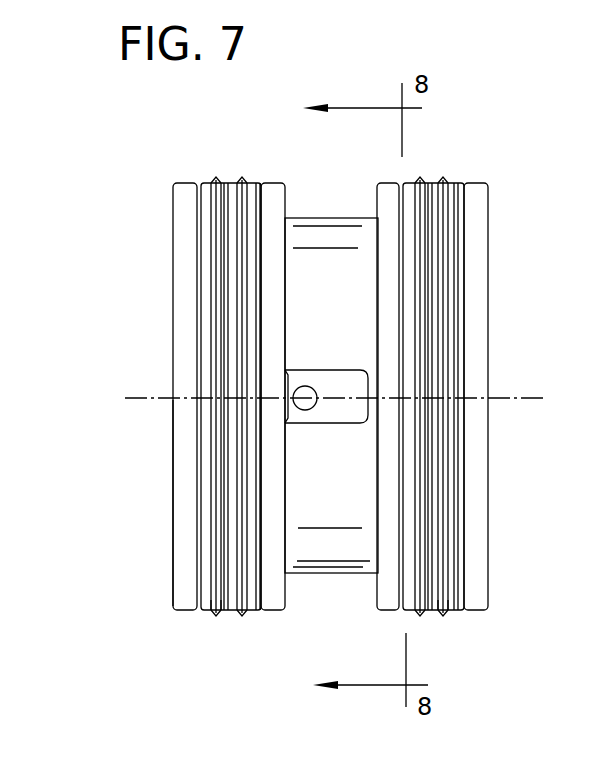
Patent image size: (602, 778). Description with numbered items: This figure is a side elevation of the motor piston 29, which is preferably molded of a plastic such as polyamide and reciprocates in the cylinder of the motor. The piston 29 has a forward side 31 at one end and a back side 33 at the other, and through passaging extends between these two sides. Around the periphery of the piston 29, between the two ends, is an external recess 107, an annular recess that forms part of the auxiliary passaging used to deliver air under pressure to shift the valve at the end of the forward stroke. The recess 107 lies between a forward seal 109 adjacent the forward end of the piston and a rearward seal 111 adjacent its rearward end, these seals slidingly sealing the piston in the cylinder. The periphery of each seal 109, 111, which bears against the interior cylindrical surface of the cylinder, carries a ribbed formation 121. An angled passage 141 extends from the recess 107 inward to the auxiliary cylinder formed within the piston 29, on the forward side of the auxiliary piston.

The piston 29 is at (162, 620).
The forward side 31 is at (155, 319).
The back side 33 is at (508, 335).
The external recess 107 is at (323, 218).
The forward seal 109 is at (231, 168).
The rearward seal 111 is at (434, 168).
The ribbed formation 121 is at (216, 617).
The angled passage 141 is at (310, 410).